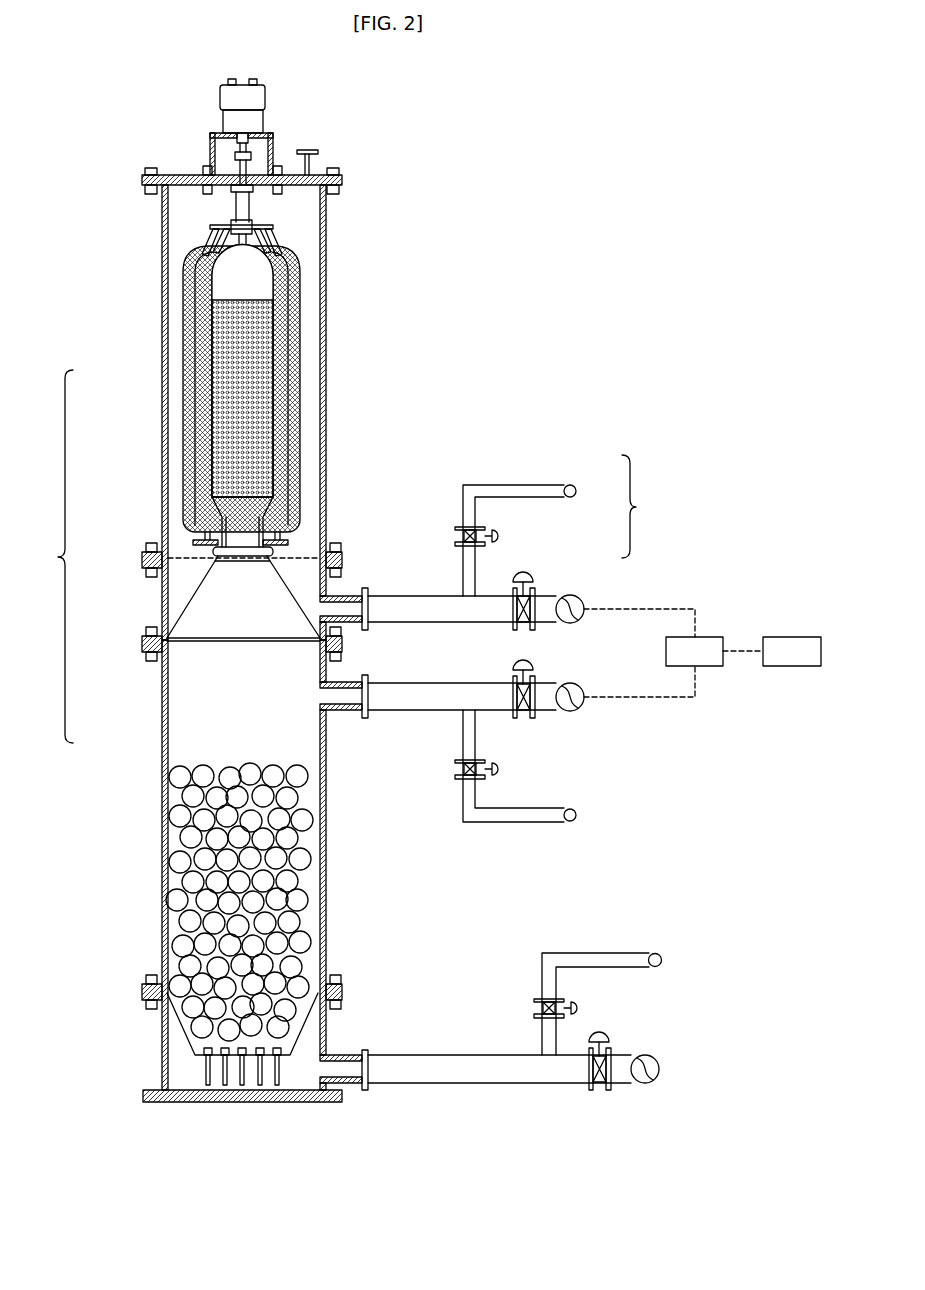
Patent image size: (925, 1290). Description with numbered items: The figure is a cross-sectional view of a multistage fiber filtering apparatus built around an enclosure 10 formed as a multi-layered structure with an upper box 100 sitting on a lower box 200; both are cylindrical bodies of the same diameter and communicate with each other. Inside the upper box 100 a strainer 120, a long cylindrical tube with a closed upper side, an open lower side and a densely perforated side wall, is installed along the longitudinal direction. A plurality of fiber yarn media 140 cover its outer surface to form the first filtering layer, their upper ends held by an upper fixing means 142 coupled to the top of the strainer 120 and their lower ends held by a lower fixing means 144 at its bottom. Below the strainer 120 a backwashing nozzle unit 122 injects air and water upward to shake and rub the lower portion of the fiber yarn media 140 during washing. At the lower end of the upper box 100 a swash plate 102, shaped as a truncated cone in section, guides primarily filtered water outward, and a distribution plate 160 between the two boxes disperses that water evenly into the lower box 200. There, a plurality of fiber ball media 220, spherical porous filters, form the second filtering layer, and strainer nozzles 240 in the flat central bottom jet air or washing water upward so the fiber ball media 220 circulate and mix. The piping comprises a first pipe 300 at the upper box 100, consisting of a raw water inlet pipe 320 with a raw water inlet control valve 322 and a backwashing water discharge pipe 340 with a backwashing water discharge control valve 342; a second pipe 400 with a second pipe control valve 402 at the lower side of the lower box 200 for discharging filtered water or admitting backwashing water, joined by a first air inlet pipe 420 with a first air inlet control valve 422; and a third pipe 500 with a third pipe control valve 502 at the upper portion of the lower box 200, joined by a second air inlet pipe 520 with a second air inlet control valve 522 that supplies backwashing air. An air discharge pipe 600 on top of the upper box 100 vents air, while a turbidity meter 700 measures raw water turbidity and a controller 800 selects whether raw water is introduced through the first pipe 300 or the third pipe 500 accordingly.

The enclosure 10 is at (53, 556).
The upper box 100 is at (162, 372).
The swash plate 102 is at (172, 576).
The strainer 120 is at (258, 280).
The backwashing nozzle unit 122 is at (283, 553).
The fiber yarn media 140 is at (300, 355).
The upper fixing means 142 is at (280, 236).
The lower fixing means 144 is at (316, 538).
The distribution plate 160 is at (247, 642).
The lower box 200 is at (162, 737).
The fiber ball media 220 is at (306, 855).
The strainer nozzles 240 is at (279, 1066).
The first pipe 300 is at (644, 506).
The raw water inlet pipe 320 is at (548, 597).
The raw water inlet control valve 322 is at (532, 630).
The backwashing water discharge pipe 340 is at (530, 485).
The backwashing water discharge control valve 342 is at (456, 530).
The second pipe 400 is at (475, 1085).
The second pipe control valve 402 is at (607, 1090).
The first air inlet pipe 420 is at (597, 953).
The first air inlet control valve 422 is at (535, 1000).
The third pipe 500 is at (447, 690).
The third pipe control valve 502 is at (534, 718).
The second air inlet pipe 520 is at (517, 822).
The second air inlet control valve 522 is at (455, 762).
The air discharge pipe 600 is at (306, 150).
The turbidity meter 700 is at (713, 668).
The controller 800 is at (790, 668).